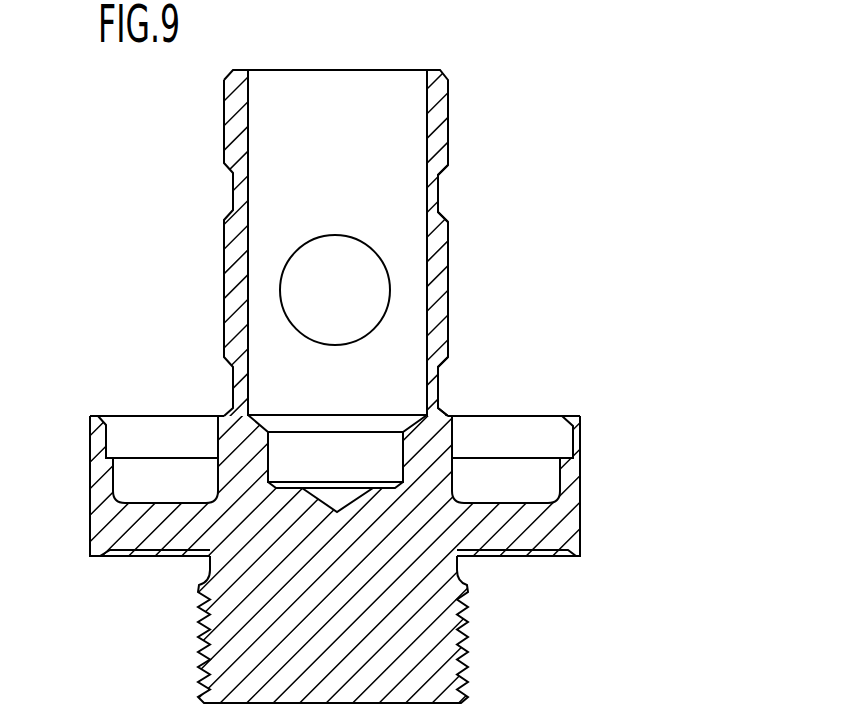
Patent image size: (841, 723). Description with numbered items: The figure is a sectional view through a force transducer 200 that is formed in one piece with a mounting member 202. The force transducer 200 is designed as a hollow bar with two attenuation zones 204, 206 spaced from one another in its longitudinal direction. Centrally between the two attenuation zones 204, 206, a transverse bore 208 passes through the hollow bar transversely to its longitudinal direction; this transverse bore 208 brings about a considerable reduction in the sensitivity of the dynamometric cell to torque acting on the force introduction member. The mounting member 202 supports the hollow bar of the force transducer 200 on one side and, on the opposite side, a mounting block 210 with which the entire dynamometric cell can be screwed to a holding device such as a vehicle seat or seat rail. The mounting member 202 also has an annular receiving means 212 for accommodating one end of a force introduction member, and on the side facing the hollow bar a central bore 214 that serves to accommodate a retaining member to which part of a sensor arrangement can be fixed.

The force transducer 200 is at (316, 243).
The mounting member 202 is at (432, 537).
The attenuation zone 204 is at (438, 182).
The attenuation zone 206 is at (438, 383).
The transverse bore 208 is at (335, 237).
The mounting block 210 is at (467, 635).
The annular receiving means 212 is at (552, 497).
The central bore 214 is at (268, 462).